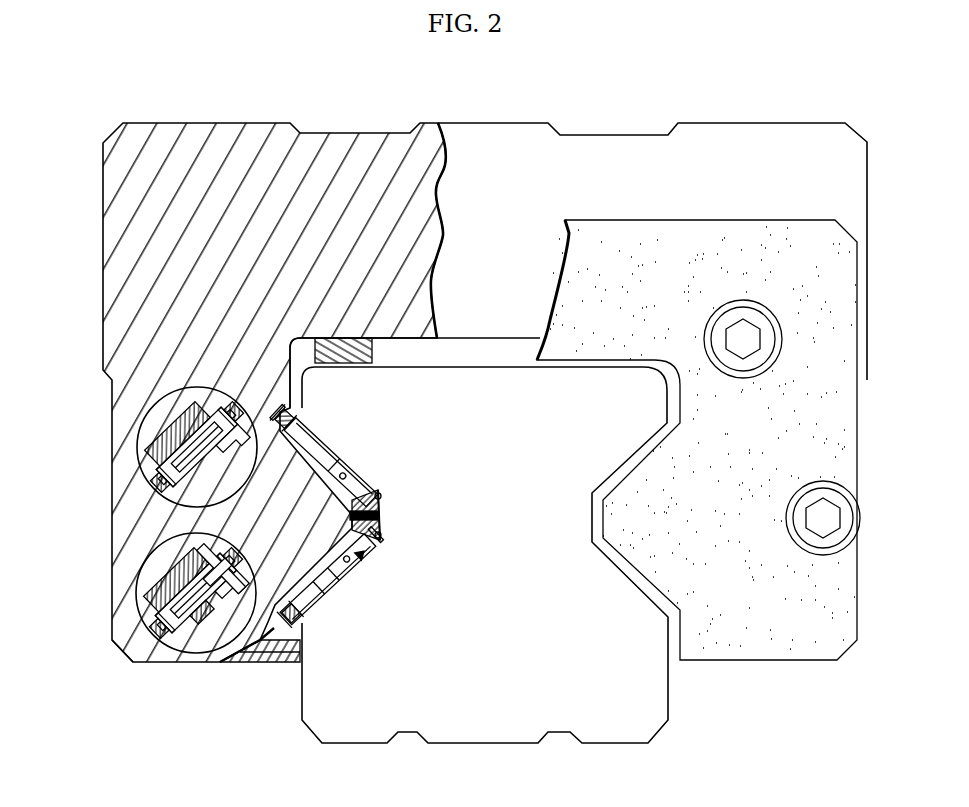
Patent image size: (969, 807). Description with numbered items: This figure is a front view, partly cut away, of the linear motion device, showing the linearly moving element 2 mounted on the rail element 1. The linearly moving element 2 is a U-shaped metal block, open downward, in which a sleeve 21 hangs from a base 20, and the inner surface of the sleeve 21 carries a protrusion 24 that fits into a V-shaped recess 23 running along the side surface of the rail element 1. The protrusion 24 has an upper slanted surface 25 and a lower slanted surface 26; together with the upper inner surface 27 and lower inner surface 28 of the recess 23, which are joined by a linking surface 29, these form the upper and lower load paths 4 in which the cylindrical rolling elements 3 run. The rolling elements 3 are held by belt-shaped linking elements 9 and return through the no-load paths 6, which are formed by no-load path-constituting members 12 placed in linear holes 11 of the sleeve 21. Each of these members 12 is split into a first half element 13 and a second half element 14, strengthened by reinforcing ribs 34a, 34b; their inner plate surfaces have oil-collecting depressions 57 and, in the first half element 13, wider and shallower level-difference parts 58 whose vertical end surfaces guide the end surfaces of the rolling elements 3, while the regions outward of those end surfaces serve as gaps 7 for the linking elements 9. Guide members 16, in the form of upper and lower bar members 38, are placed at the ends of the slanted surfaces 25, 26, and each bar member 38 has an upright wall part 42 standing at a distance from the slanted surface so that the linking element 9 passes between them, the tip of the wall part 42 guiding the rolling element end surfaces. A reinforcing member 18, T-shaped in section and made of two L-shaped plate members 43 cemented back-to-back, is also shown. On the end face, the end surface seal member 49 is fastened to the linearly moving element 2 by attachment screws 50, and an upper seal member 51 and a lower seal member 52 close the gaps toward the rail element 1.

The rail element 1 is at (598, 728).
The linearly moving element 2 is at (617, 142).
The rolling elements 3 is at (150, 433).
The load paths 4 is at (353, 467).
The no-load paths 6 is at (257, 653).
The gaps 7 is at (147, 483).
The linking elements 9 is at (172, 392).
The linear holes 11 is at (170, 395).
The no-load path-constituting members 12 is at (137, 463).
The first half elements 13 is at (150, 445).
The second half elements 14 is at (155, 505).
The guide members 16 is at (300, 420).
The reinforcing members 18 is at (380, 518).
The base 20 is at (492, 157).
The sleeve 21 is at (130, 647).
The recesses 23 is at (377, 490).
The protrusions 24 is at (338, 578).
The upper slanted surface 25 is at (348, 458).
The lower slanted surface 26 is at (323, 590).
The upper inner surface 27 is at (350, 473).
The lower inner surface 28 is at (357, 583).
The linking surface 29 is at (380, 558).
The reinforcing rib 34a is at (150, 405).
The reinforcing rib 34b is at (173, 533).
The bar members 38 is at (302, 410).
The upright wall part 42 is at (313, 423).
The plate members 43 is at (380, 507).
The end surface seal member 49 is at (807, 230).
The attachment screw 50 is at (743, 320).
The upper seal member 51 is at (370, 337).
The lower seal member 52 is at (282, 662).
The depressions 57 is at (147, 610).
The level-difference parts 58 is at (143, 605).